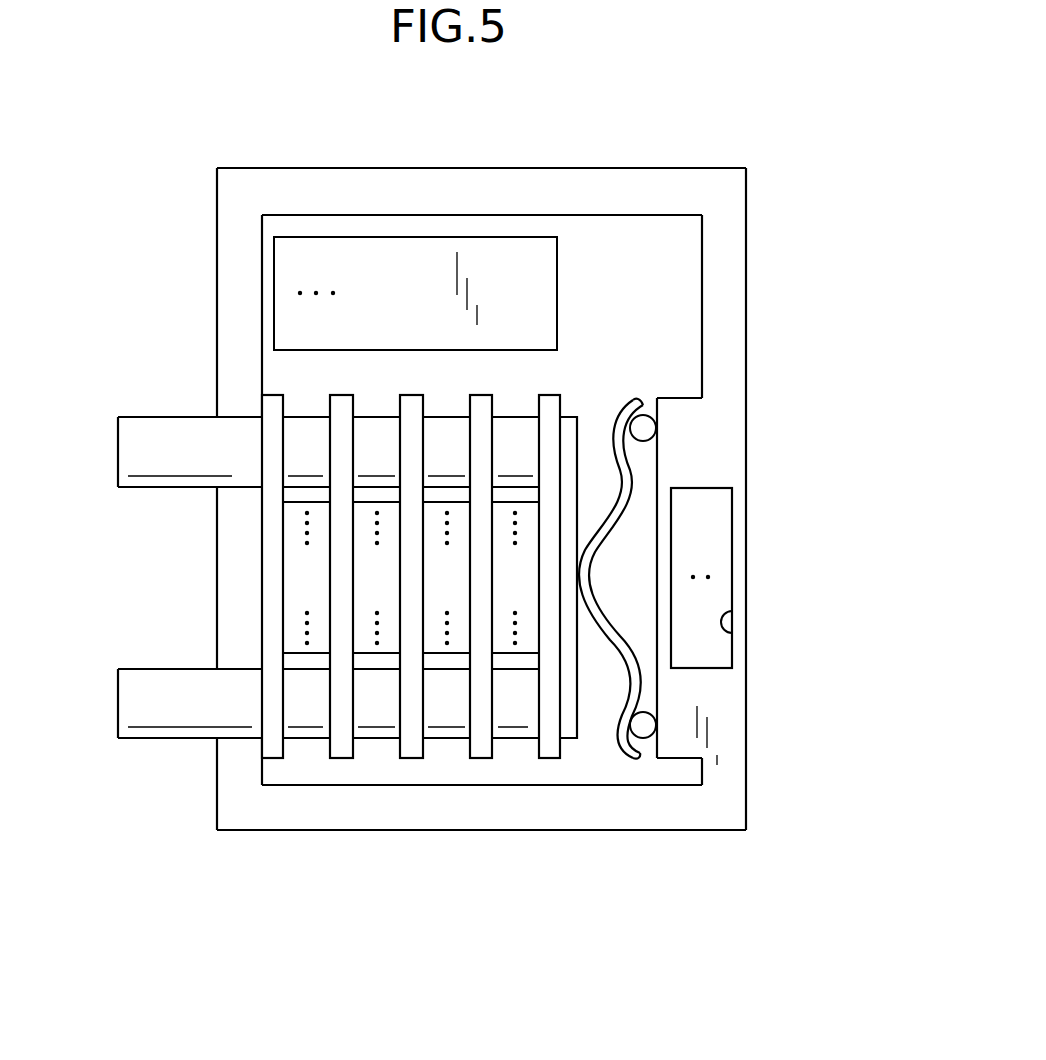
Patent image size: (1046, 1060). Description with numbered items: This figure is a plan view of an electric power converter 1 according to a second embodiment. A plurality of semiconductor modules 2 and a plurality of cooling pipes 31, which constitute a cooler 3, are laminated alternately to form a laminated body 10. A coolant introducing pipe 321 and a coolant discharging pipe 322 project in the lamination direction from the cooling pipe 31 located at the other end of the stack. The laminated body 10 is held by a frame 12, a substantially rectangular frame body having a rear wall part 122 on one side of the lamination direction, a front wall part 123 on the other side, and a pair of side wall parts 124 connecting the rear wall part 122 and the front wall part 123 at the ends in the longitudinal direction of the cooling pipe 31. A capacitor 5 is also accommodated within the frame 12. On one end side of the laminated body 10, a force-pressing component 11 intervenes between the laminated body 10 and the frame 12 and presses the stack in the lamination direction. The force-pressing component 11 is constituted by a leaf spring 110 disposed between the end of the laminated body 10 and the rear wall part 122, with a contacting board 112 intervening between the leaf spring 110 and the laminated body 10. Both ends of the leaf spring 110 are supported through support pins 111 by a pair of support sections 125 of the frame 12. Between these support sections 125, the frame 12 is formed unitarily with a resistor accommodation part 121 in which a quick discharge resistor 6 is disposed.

The electric power converter 1 is at (641, 133).
The semiconductor module 2 is at (362, 640).
The cooler 3 is at (272, 747).
The capacitor 5 is at (402, 265).
The quick discharge resistor 6 is at (707, 531).
The laminated body 10 is at (576, 388).
The force-pressing component 11 is at (615, 535).
The frame 12 is at (673, 193).
The cooling pipe 31 is at (345, 553).
The leaf spring 110 is at (663, 482).
The support pin 111 is at (643, 721).
The contacting board 112 is at (568, 712).
The resistor accommodation part 121 is at (715, 634).
The rear wall part 122 is at (722, 309).
The front wall part 123 is at (237, 572).
The side wall part 124 is at (367, 195).
The support section 125 is at (680, 417).
The coolant introducing pipe 321 is at (148, 728).
The coolant discharging pipe 322 is at (148, 437).